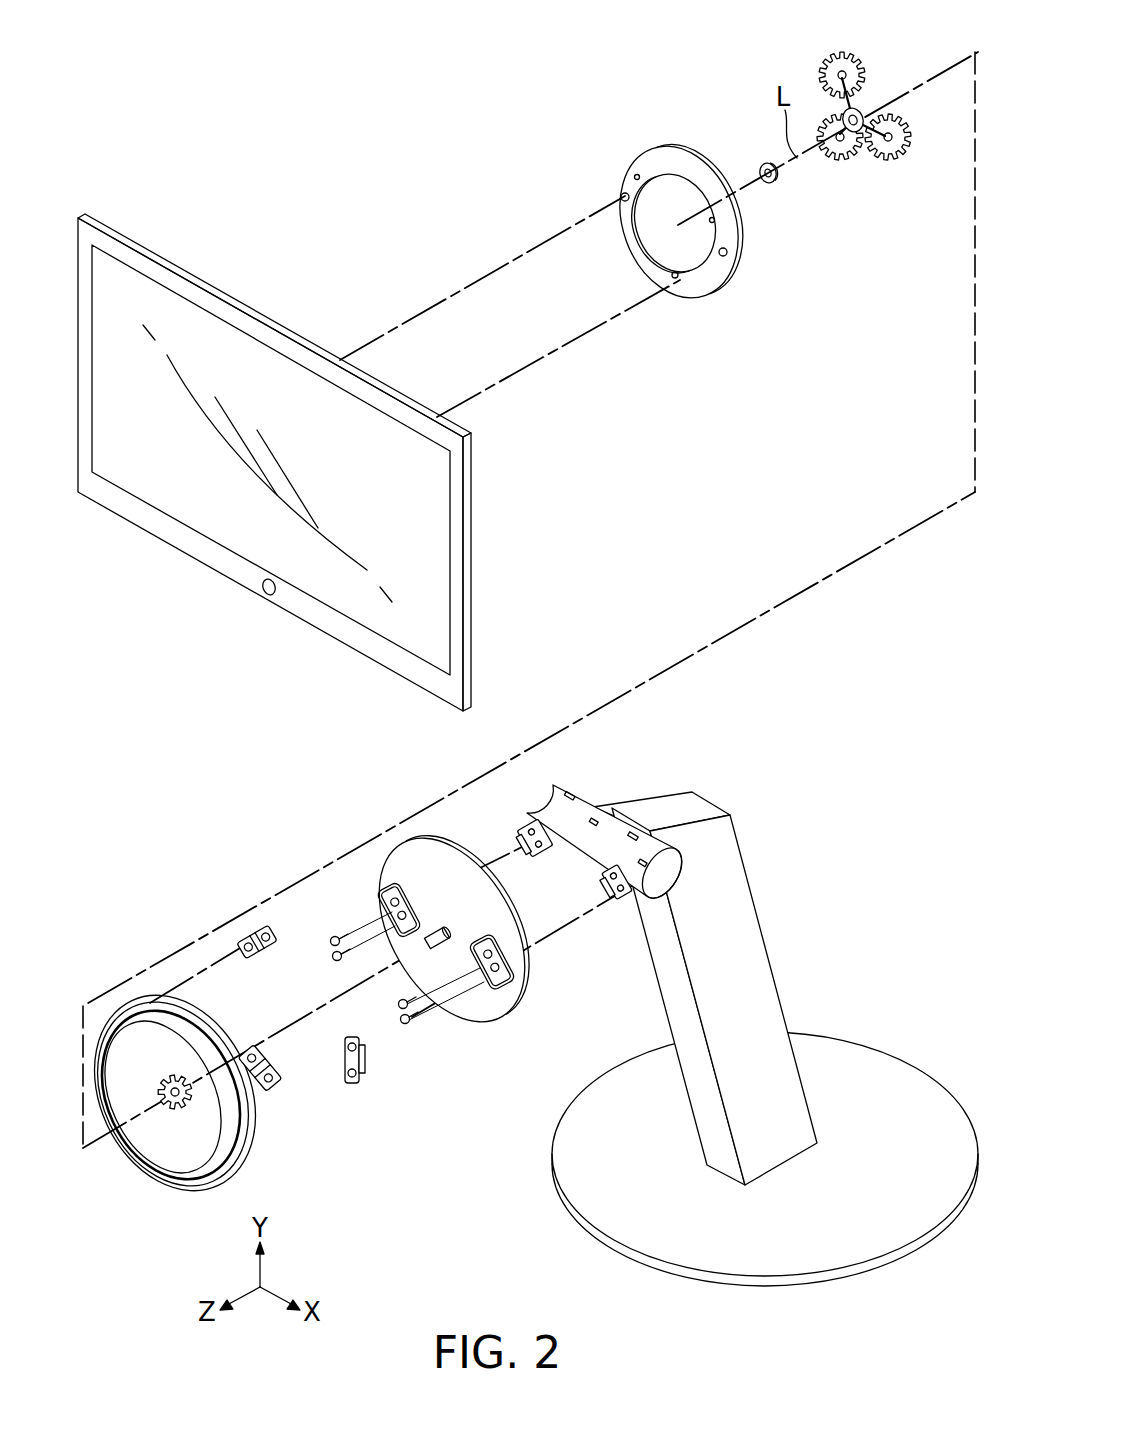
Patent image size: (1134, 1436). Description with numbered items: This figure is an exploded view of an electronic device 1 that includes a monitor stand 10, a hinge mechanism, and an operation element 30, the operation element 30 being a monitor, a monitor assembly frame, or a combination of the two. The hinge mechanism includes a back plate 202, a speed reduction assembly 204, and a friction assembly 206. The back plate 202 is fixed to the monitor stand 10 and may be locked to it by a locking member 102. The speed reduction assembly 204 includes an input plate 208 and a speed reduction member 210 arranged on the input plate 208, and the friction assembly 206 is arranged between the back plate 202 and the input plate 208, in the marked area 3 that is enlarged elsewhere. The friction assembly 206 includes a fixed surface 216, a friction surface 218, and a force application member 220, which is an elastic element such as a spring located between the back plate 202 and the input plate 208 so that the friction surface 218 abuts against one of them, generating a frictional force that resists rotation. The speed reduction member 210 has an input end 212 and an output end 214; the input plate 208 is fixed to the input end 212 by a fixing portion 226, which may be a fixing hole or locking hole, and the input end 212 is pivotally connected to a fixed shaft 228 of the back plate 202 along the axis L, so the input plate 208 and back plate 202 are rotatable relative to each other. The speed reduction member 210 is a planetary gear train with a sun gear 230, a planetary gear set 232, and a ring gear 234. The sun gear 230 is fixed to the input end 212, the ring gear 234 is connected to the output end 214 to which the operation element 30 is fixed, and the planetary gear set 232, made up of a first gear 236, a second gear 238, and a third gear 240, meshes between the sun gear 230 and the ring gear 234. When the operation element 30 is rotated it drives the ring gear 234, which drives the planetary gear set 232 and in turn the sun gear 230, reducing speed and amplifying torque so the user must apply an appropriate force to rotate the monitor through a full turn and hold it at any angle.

The electronic device 1 is at (93, 62).
The operation element 30 is at (127, 470).
The monitor stand 10 is at (763, 933).
The area 3 is at (370, 1091).
The locking member 102 is at (413, 1022).
The back plate 202 is at (497, 882).
The speed reduction assembly 204 is at (850, 685).
The friction assembly 206 is at (445, 1128).
The input plate 208 is at (113, 1018).
The speed reduction member 210 is at (914, 648).
The input end 212 is at (170, 1080).
The output end 214 is at (723, 257).
The fixed surface 216 is at (357, 1095).
The friction surface 218 is at (382, 1056).
The force application member 220 is at (343, 1063).
The fixing portion 226 is at (180, 1108).
The fixed shaft 228 is at (444, 926).
The sun gear 230 is at (145, 1140).
The planetary gear set 232 is at (880, 158).
The ring gear 234 is at (657, 162).
The first gear 236 is at (838, 160).
The second gear 238 is at (882, 160).
The third gear 240 is at (867, 83).